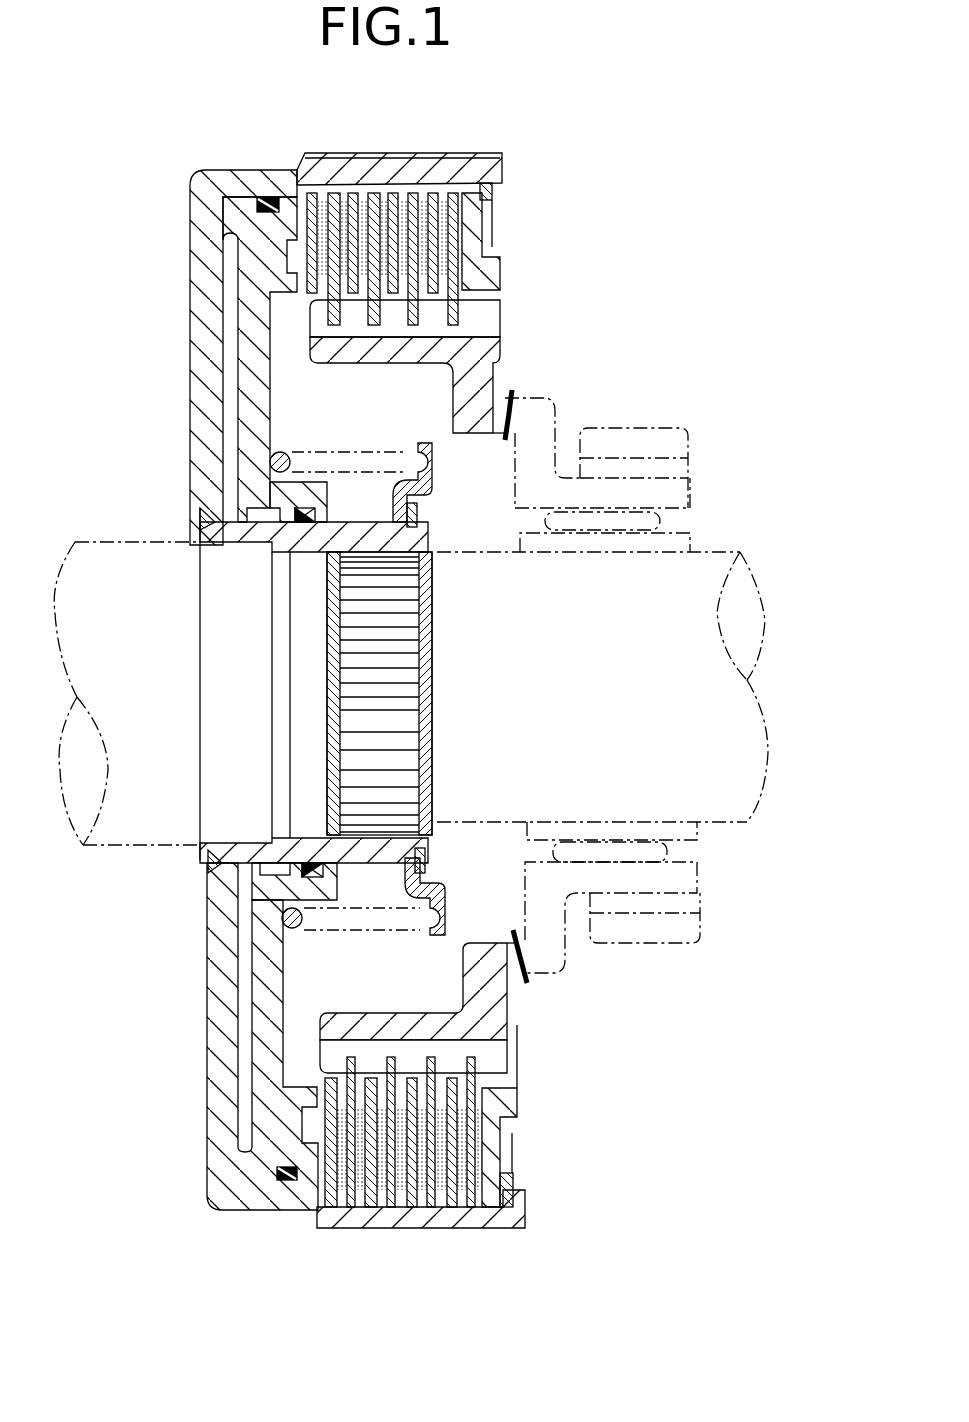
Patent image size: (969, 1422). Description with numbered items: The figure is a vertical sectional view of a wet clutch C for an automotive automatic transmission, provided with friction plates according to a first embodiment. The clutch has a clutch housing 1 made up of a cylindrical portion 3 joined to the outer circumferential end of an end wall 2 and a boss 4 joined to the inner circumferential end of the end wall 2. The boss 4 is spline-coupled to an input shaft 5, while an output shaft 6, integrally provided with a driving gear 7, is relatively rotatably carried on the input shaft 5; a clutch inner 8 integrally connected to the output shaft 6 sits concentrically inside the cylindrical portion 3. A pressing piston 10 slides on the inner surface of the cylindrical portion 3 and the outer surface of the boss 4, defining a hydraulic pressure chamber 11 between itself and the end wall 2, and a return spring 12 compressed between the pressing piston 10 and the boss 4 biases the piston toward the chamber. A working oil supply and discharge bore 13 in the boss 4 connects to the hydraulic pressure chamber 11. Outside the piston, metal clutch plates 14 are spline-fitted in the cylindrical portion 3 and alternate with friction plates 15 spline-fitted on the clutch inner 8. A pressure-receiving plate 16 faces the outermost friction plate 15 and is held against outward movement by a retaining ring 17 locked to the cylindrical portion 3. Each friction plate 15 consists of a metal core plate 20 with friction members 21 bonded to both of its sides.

The clutch housing 1 is at (292, 652).
The end wall 2 is at (200, 317).
The cylindrical portion 3 is at (343, 172).
The boss 4 is at (235, 527).
The input shaft 5 is at (155, 542).
The output shaft 6 is at (655, 492).
The driving gear 7 is at (647, 433).
The clutch inner 8 is at (392, 348).
The pressing piston 10 is at (267, 430).
The hydraulic pressure chamber 11 is at (232, 405).
The return spring 12 is at (343, 930).
The working oil supply and discharge bore 13 is at (267, 847).
The clutch plates 14 is at (447, 1205).
The friction plates 15 is at (439, 1139).
The pressure-receiving plate 16 is at (517, 1102).
The retaining ring 17 is at (513, 1182).
The core plate 20 is at (470, 1177).
The friction members 21 is at (545, 1266).
The wet clutch C is at (467, 261).